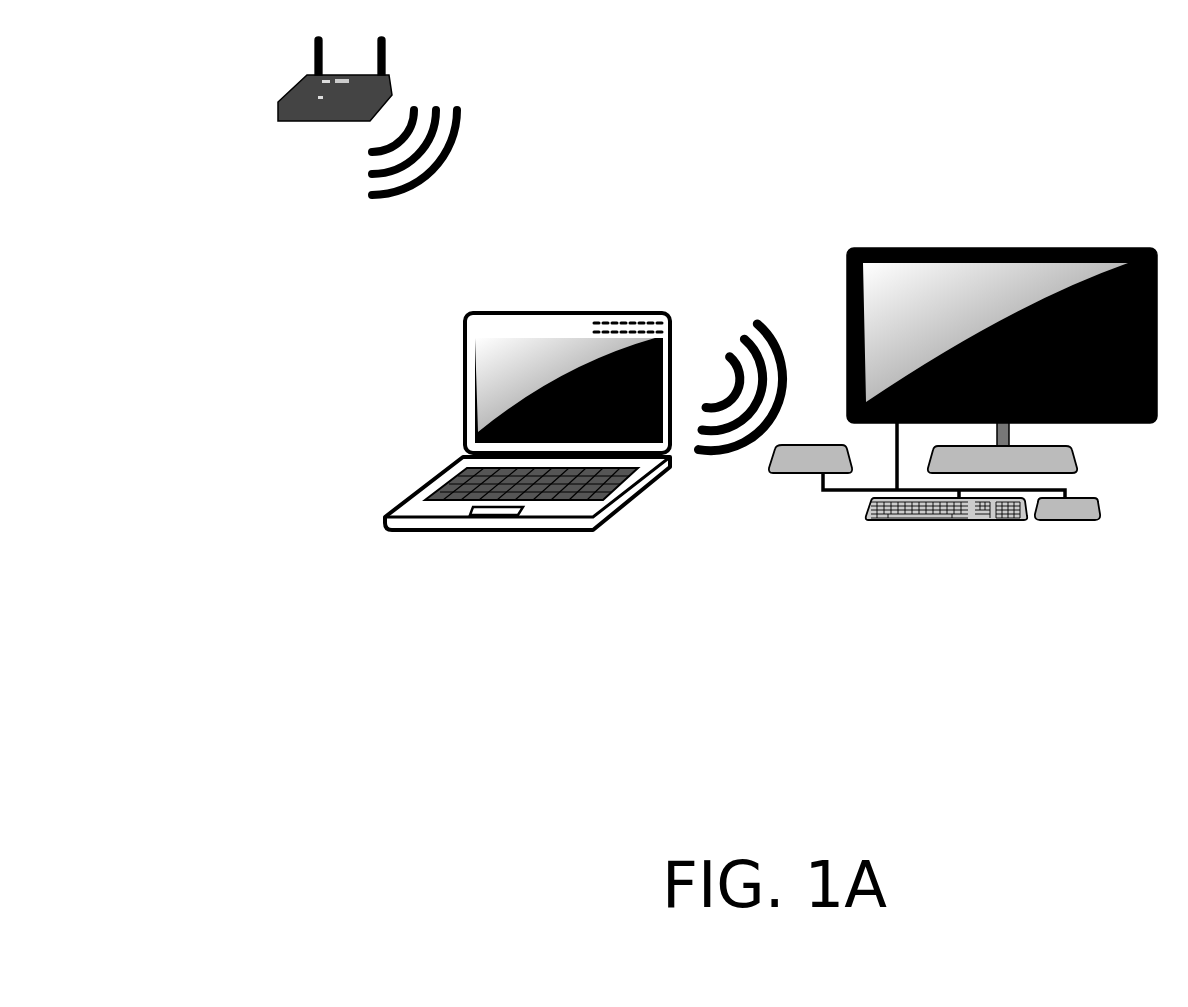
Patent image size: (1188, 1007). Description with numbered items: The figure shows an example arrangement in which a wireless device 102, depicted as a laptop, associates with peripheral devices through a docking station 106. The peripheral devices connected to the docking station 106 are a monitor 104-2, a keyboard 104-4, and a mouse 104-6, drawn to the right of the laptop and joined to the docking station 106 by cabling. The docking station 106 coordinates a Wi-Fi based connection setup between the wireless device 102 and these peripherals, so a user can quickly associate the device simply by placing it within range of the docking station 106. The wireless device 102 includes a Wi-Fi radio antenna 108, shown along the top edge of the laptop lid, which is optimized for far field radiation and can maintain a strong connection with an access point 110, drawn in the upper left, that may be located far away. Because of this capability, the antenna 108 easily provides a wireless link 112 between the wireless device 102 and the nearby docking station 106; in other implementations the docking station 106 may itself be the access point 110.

The access point (AP) 110 is at (266, 101).
The wireless device 102 is at (427, 482).
The antenna 108 is at (587, 318).
The wireless link 112 is at (755, 323).
The monitor 104-2 is at (930, 233).
The docking station 106 is at (776, 482).
The keyboard 104-4 is at (931, 540).
The mouse 104-6 is at (1078, 540).